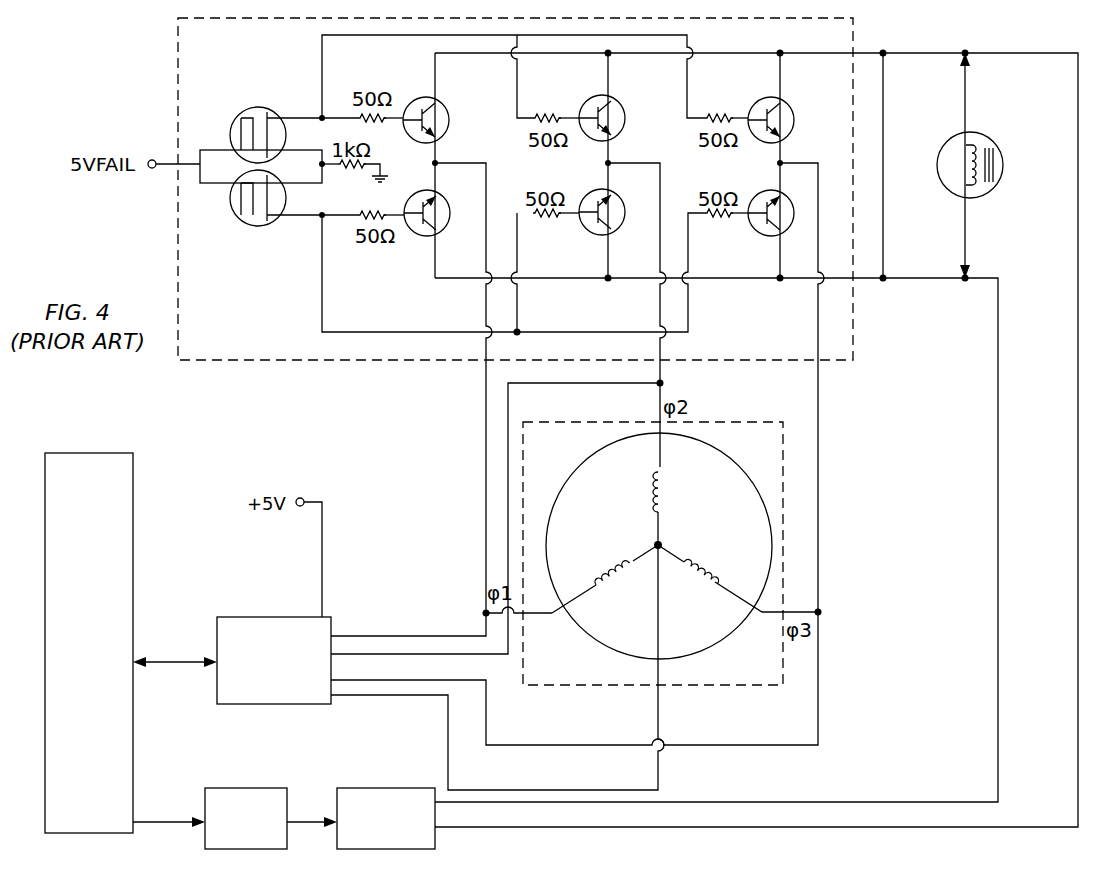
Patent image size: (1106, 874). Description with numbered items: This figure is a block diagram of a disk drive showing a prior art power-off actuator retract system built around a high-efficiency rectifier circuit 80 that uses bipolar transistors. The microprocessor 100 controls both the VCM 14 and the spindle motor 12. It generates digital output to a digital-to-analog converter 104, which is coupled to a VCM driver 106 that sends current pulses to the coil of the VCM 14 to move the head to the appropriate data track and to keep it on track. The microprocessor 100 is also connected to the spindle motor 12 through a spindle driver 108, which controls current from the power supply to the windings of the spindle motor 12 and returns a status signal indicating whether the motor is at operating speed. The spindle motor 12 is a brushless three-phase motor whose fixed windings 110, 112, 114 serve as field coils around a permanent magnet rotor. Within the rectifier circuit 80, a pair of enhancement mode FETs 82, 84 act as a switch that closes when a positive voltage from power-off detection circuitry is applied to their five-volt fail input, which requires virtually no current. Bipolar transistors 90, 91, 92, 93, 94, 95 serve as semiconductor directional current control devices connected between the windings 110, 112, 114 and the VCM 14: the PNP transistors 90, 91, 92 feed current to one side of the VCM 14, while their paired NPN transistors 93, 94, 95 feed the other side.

The rectifier circuit 80 is at (178, 72).
The enhancement mode FET 82 is at (276, 108).
The enhancement mode FET 84 is at (262, 226).
The PNP transistor 90 is at (428, 99).
The PNP transistor 91 is at (602, 97).
The PNP transistor 92 is at (768, 98).
The NPN transistor 93 is at (425, 237).
The NPN transistor 94 is at (586, 236).
The NPN transistor 95 is at (772, 237).
The VCM 14 is at (995, 134).
The microprocessor 100 is at (83, 453).
The spindle driver 108 is at (242, 617).
The digital-to-analog converter 104 is at (247, 788).
The VCM driver 106 is at (377, 788).
The fixed winding 110 is at (625, 585).
The fixed winding 112 is at (660, 491).
The fixed winding 114 is at (708, 556).
The spindle motor 12 is at (717, 608).